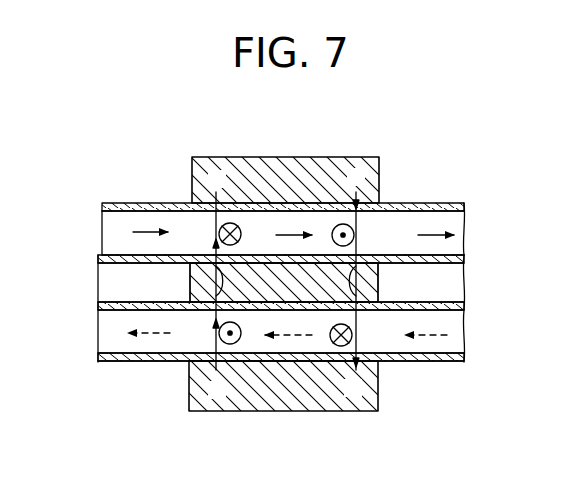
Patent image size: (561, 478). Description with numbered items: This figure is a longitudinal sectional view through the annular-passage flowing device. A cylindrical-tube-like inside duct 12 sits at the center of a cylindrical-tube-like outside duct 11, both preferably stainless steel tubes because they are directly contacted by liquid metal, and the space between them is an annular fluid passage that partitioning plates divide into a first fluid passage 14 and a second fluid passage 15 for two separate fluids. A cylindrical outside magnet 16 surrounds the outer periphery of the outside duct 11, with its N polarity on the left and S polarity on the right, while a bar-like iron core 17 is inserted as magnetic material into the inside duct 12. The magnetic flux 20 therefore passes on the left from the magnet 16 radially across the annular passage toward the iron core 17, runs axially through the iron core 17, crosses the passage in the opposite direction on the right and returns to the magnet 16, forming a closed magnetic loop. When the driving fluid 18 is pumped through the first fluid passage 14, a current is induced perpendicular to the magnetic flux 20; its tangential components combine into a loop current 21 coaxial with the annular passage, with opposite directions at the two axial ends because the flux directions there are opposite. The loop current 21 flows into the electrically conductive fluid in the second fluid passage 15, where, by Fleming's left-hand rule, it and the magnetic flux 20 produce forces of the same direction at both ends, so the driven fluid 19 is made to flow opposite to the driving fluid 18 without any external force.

The outside duct 11 is at (172, 203).
The inside duct 12 is at (115, 255).
The first fluid passage 14 is at (205, 244).
The second fluid passage 15 is at (205, 344).
The outside magnet 16 is at (343, 157).
The iron core 17 is at (190, 287).
The driving fluid 18 is at (142, 232).
The driven fluid 19 is at (152, 335).
The magnetic flux 20 is at (214, 347).
The loop current 21 is at (238, 342).